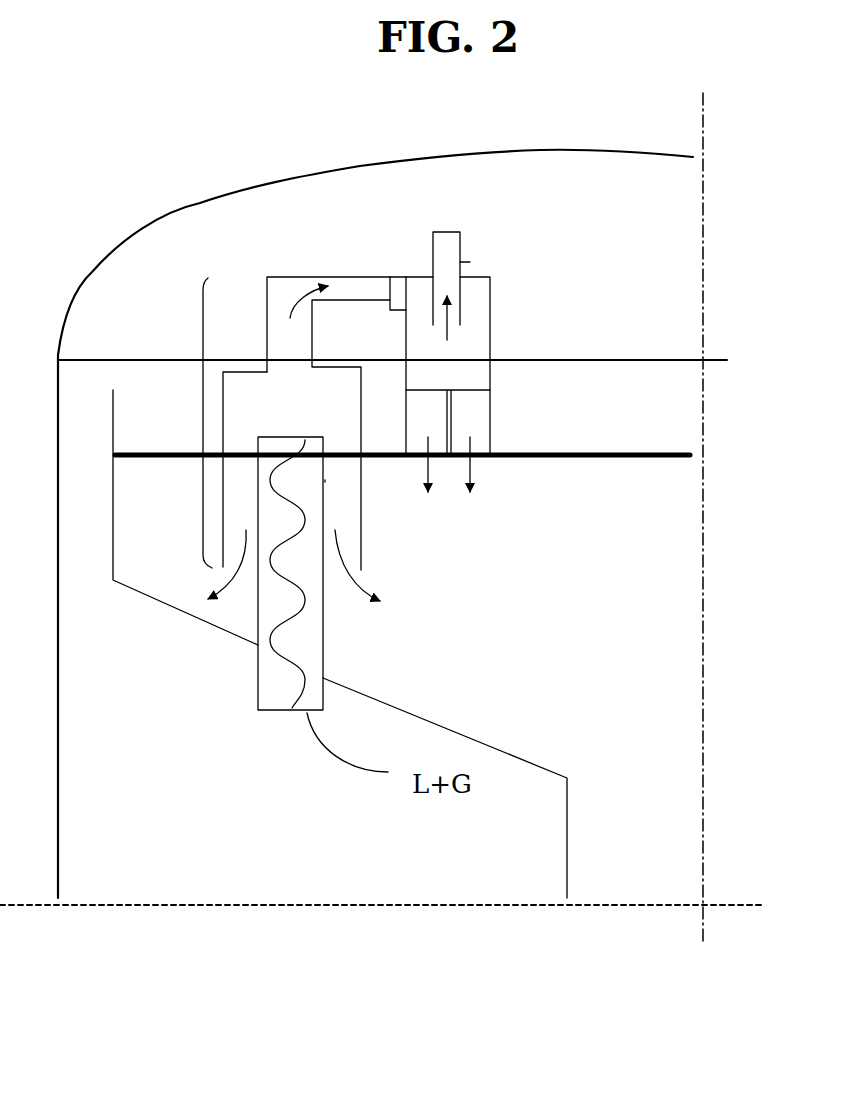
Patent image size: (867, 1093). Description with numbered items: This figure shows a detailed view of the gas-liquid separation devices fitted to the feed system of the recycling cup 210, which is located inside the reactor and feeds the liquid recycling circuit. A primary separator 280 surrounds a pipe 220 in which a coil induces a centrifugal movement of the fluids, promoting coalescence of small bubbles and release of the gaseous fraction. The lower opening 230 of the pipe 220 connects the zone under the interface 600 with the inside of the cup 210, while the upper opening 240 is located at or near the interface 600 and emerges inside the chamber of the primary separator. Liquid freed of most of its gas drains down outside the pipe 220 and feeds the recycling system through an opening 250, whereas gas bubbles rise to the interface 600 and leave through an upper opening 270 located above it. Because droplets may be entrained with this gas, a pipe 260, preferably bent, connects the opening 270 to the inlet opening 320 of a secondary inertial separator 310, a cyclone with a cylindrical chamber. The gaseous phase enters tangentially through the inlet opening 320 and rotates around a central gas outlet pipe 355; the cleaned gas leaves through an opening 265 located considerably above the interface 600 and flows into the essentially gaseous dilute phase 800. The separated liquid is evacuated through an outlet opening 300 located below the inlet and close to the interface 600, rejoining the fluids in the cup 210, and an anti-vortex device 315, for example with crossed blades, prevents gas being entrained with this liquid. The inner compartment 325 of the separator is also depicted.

The gaseous dilute phase 800 is at (668, 279).
The secondary inertial separator 310 is at (392, 350).
The interface 600 is at (645, 452).
The recycling cup 210 is at (160, 601).
The primary separator 280 is at (200, 431).
The upper opening 270 is at (284, 372).
The pipe 260 is at (302, 277).
The inner box 325 is at (351, 435).
The inlet opening 320 is at (390, 290).
The outlet opening 300 is at (480, 460).
The gas evacuation opening 265 is at (447, 232).
The gas outlet pipe 355 is at (470, 262).
The anti-vortex device 315 is at (493, 425).
The upper opening 240 is at (278, 554).
The lower opening 230 is at (258, 678).
The pipe 220 is at (325, 477).
The opening 250 is at (340, 598).